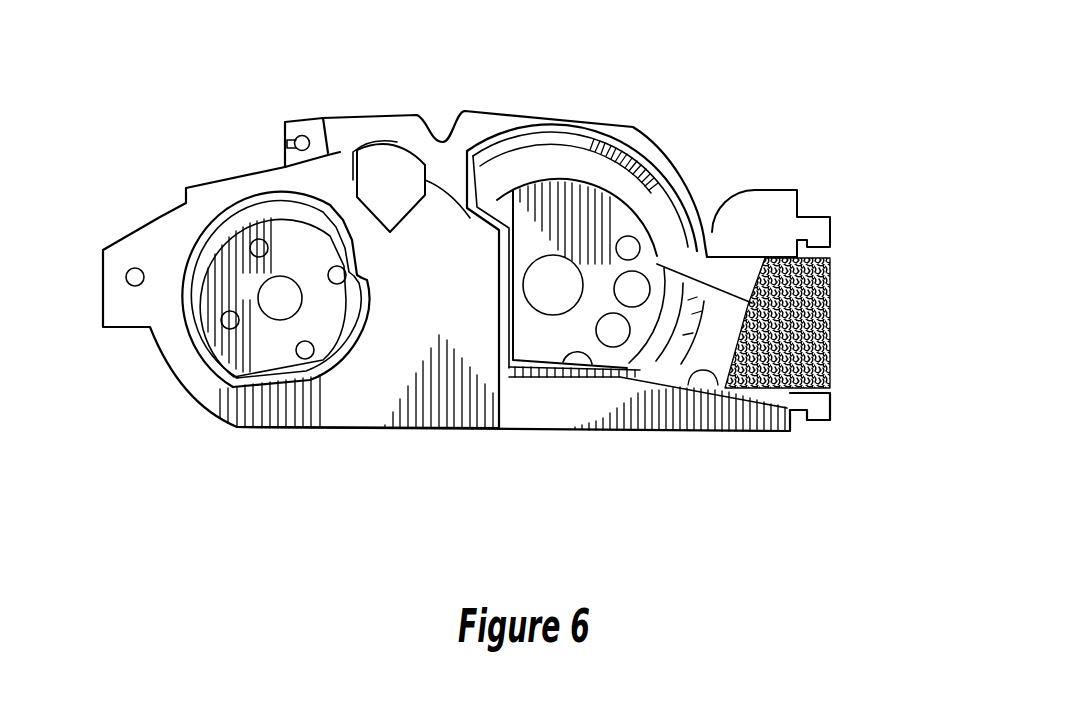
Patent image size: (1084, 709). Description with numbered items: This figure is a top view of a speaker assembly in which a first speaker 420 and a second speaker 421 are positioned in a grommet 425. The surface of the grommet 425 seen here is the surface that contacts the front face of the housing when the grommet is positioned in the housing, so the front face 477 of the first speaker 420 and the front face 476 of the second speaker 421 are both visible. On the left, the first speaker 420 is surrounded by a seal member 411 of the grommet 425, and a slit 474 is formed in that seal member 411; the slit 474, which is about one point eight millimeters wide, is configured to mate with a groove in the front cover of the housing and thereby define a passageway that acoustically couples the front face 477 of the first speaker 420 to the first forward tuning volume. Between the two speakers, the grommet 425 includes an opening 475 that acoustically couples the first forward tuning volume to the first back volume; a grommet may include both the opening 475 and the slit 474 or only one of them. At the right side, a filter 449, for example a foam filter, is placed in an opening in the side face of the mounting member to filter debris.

The seal member 411 is at (190, 303).
The front face of the first speaker 477 is at (230, 278).
The slit 474 is at (355, 302).
The opening 475 is at (391, 177).
The grommet 425 is at (597, 100).
The front face of the second speaker 476 is at (577, 225).
The second speaker 421 is at (588, 275).
The filter 449 is at (830, 352).
The first speaker 420 is at (263, 340).